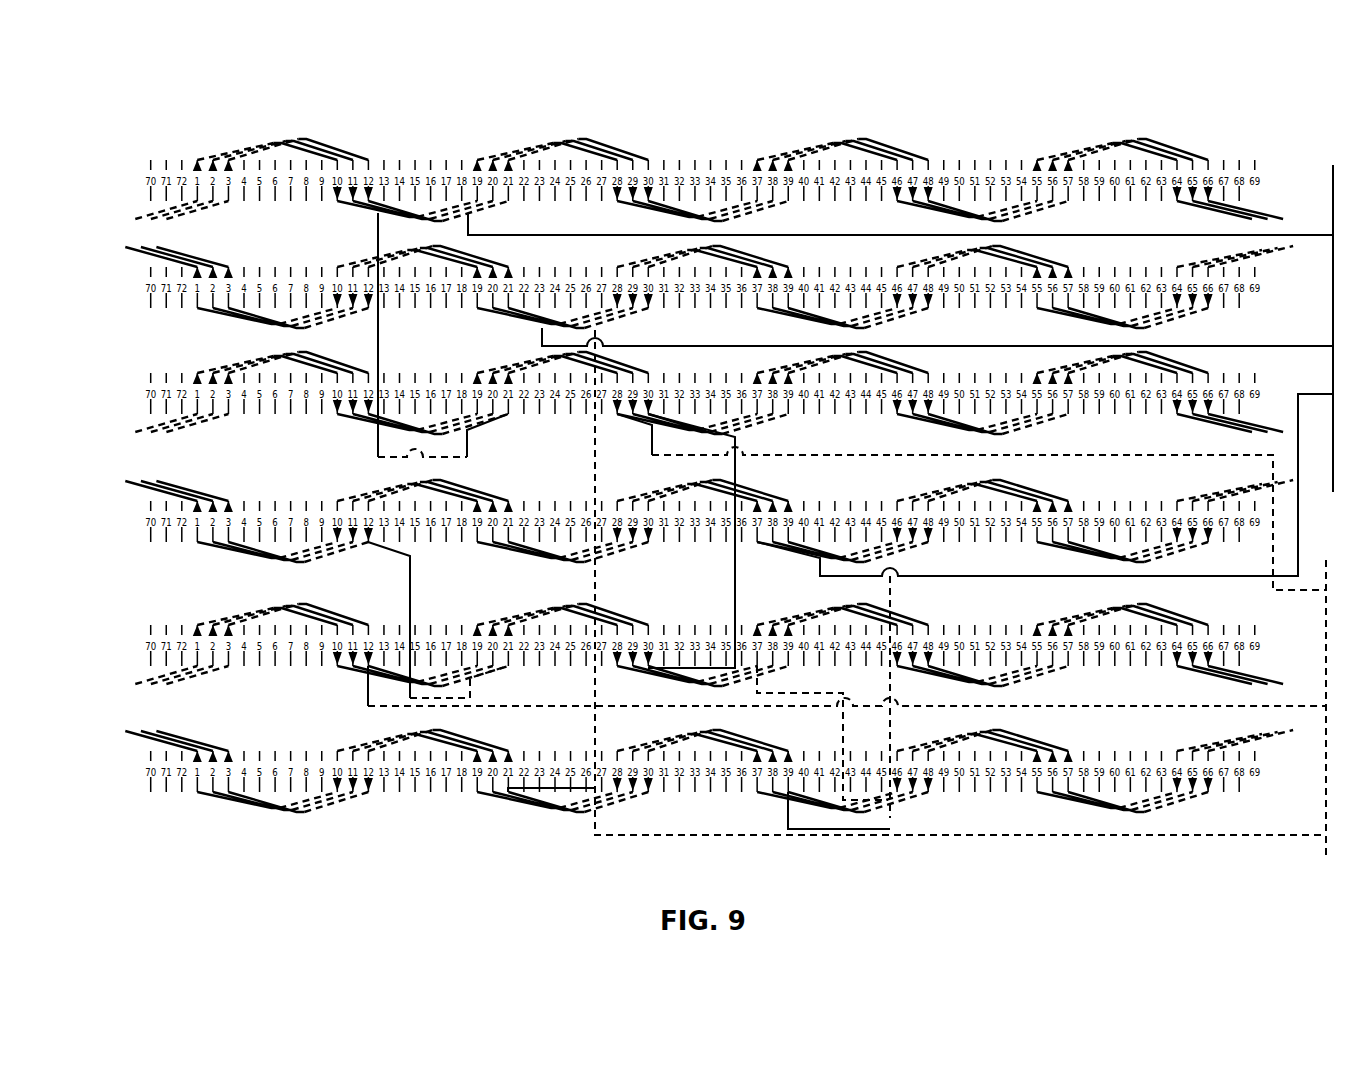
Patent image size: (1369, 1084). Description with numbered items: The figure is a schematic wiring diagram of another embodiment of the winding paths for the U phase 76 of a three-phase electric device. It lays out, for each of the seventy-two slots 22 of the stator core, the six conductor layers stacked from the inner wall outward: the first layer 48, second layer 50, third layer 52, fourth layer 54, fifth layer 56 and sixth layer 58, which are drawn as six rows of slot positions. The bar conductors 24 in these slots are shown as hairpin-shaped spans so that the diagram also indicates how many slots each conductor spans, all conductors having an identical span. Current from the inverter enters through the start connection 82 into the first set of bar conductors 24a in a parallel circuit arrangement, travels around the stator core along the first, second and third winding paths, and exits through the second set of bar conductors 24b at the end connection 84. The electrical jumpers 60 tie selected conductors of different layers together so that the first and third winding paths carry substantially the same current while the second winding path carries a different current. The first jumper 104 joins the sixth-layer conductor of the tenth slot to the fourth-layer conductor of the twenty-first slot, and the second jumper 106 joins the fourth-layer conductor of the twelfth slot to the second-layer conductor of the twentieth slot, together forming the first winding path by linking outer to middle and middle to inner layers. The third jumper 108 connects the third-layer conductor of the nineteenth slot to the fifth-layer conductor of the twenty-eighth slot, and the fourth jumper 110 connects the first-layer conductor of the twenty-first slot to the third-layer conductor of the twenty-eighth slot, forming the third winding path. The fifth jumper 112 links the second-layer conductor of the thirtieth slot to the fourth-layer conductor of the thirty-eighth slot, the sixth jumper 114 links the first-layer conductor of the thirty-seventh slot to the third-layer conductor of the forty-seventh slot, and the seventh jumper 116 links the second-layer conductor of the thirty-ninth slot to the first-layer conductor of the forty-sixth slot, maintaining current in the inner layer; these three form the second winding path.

The slots 22 is at (128, 400).
The bar conductors 24 is at (1166, 145).
The first set of bar conductors 24a is at (508, 201).
The second set of bar conductors 24b is at (617, 414).
The first layer 48 is at (666, 772).
The second layer 50 is at (661, 646).
The third layer 52 is at (666, 522).
The fourth layer 54 is at (661, 394).
The fifth layer 56 is at (666, 288).
The sixth layer 58 is at (661, 181).
The electrical jumpers 60 is at (681, 521).
The U phase 76 is at (220, 106).
The start connection 82 is at (1335, 290).
The end connection 84 is at (1326, 660).
The first one of the electrical jumpers 104 is at (378, 350).
The second one of the electrical jumpers 106 is at (410, 592).
The third one of the electrical jumpers 108 is at (595, 480).
The fourth one of the electrical jumpers 110 is at (595, 594).
The fifth one of the electrical jumpers 112 is at (735, 450).
The sixth one of the electrical jumpers 114 is at (893, 818).
The seventh one of the electrical jumpers 116 is at (843, 745).